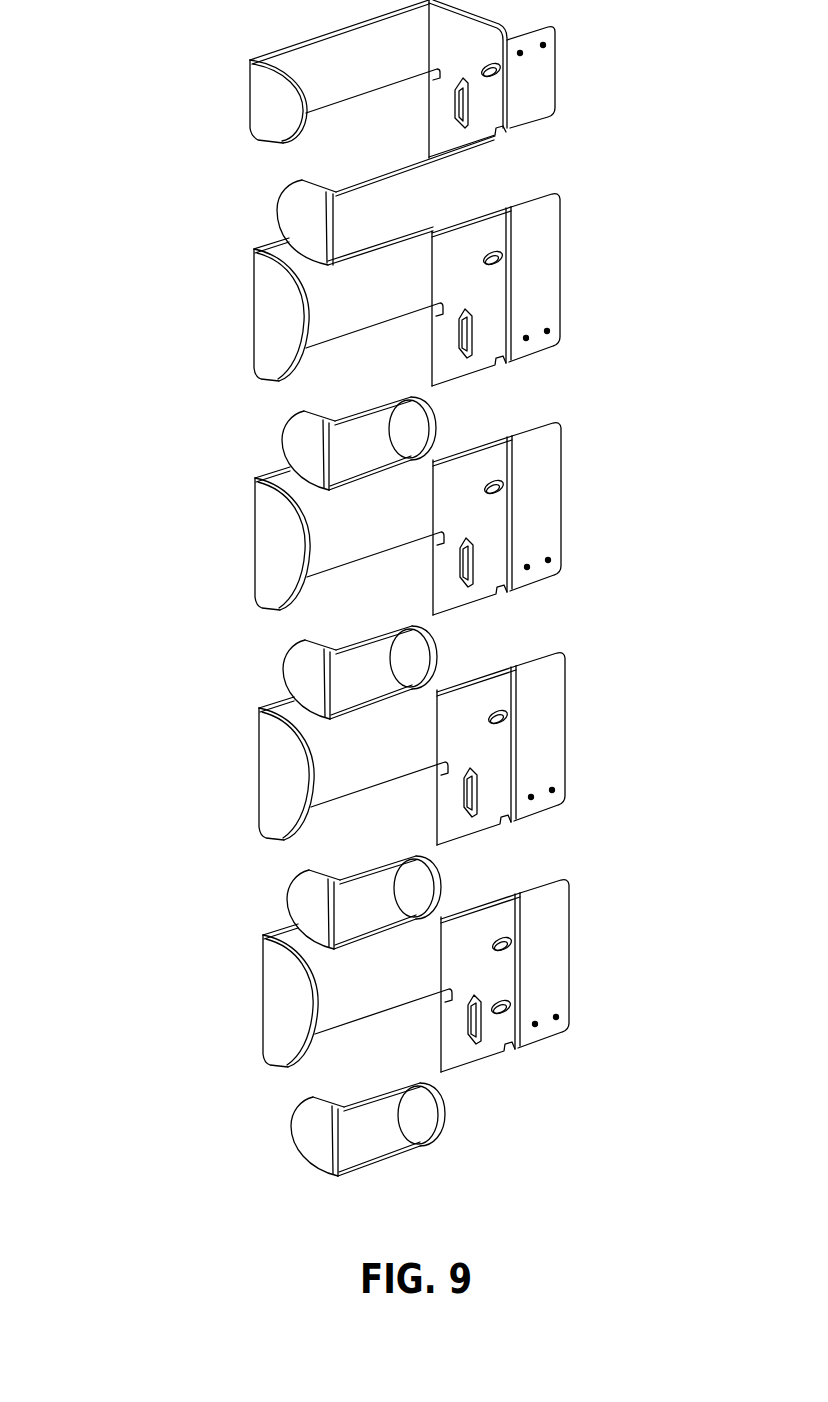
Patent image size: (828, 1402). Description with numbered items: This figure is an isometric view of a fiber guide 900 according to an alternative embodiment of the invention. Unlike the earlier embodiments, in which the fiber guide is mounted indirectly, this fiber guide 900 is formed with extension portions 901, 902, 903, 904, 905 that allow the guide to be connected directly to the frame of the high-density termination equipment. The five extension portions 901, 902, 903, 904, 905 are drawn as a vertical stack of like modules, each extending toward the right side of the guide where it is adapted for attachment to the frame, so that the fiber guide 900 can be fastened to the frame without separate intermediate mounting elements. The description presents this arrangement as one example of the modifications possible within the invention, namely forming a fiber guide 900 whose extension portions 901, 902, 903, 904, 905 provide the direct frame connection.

The fiber guide 900 is at (196, 137).
The extension portion 901 is at (543, 82).
The extension portion 902 is at (548, 283).
The extension portion 903 is at (550, 487).
The extension portion 904 is at (554, 708).
The extension portion 905 is at (558, 945).